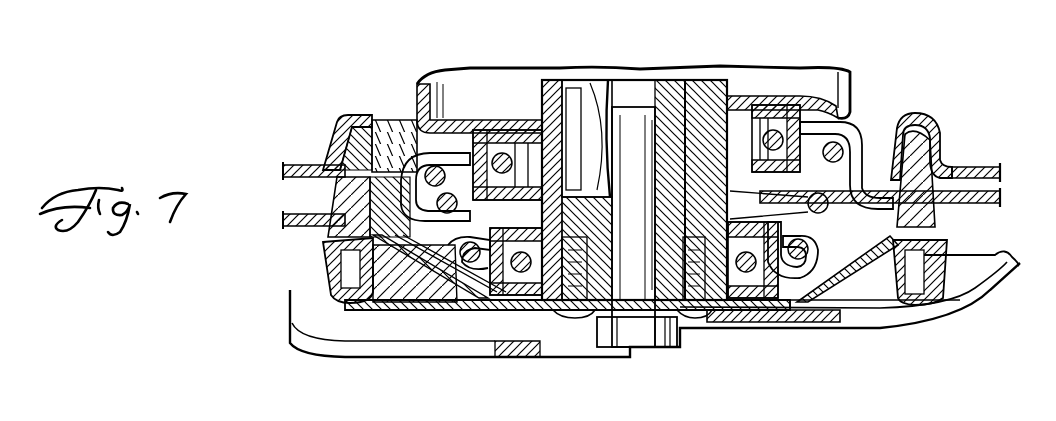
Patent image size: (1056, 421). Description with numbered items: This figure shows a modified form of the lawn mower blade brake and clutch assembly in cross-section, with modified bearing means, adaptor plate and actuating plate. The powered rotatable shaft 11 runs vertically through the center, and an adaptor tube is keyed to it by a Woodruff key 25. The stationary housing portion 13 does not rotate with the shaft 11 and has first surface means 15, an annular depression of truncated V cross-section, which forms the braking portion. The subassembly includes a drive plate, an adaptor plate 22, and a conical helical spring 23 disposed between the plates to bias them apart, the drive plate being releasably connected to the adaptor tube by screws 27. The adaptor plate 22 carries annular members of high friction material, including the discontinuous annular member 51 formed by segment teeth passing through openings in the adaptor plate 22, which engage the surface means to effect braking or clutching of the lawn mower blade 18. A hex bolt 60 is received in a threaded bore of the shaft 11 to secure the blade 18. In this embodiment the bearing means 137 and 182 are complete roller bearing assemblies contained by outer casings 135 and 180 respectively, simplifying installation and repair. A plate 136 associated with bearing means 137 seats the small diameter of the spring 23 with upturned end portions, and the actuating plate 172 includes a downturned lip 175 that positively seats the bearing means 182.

The powered rotatable shaft 11 is at (673, 92).
The stationary housing portion 13 is at (298, 178).
The first surface means 15 is at (336, 162).
The lawn mower blade 18 is at (398, 357).
The adaptor plate 22 is at (298, 230).
The conical helical spring 23 is at (826, 208).
The Woodruff key 25 is at (556, 83).
The screws 27 is at (708, 326).
The annular member 51 is at (930, 223).
The hex bolt 60 is at (676, 343).
The outer casing 135 is at (485, 302).
The plate 136 is at (826, 272).
The bearing means 137 is at (788, 300).
The actuating plate 172 is at (848, 88).
The downturned lip 175 is at (533, 124).
The outer casing 180 is at (800, 120).
The bearing means 182 is at (450, 150).